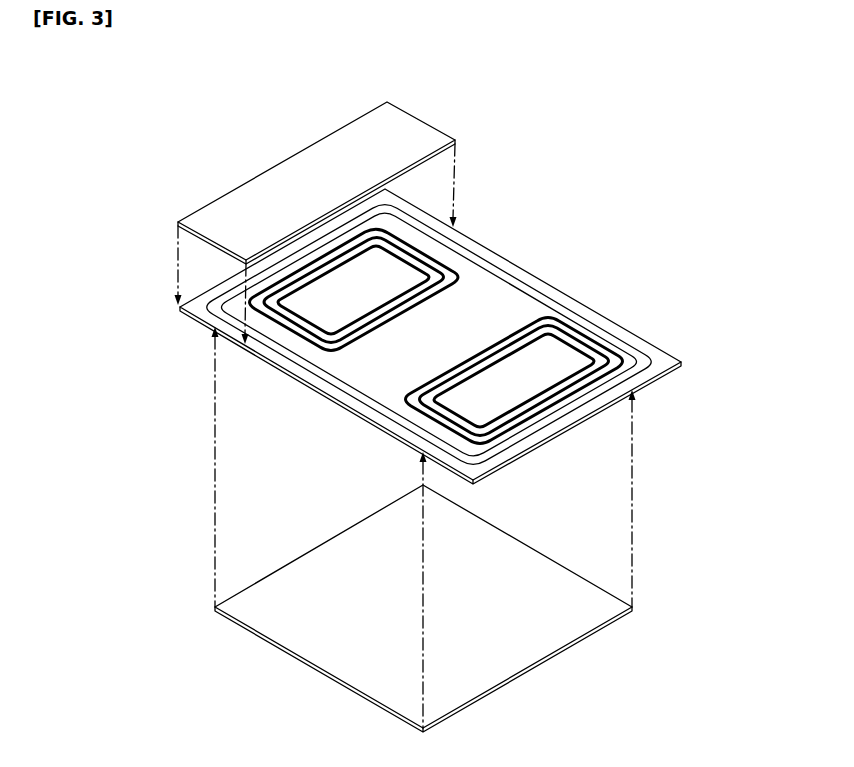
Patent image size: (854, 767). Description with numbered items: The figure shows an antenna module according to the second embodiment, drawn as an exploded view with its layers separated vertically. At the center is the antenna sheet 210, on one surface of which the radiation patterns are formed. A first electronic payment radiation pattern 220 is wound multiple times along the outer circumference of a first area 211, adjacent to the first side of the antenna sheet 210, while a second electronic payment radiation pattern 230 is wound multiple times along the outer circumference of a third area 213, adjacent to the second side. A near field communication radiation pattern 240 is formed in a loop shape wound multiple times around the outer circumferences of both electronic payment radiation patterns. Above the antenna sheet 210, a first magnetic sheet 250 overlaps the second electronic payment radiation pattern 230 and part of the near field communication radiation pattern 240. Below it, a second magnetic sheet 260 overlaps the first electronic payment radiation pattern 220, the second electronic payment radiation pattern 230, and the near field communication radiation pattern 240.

The antenna sheet 210 is at (485, 248).
The first area 211 is at (517, 382).
The third area 213 is at (361, 292).
The first electronic payment radiation pattern 220 is at (598, 336).
The second electronic payment radiation pattern 230 is at (397, 295).
The near field communication radiation pattern 240 is at (522, 273).
The first magnetic sheet 250 is at (285, 174).
The second magnetic sheet 260 is at (585, 592).